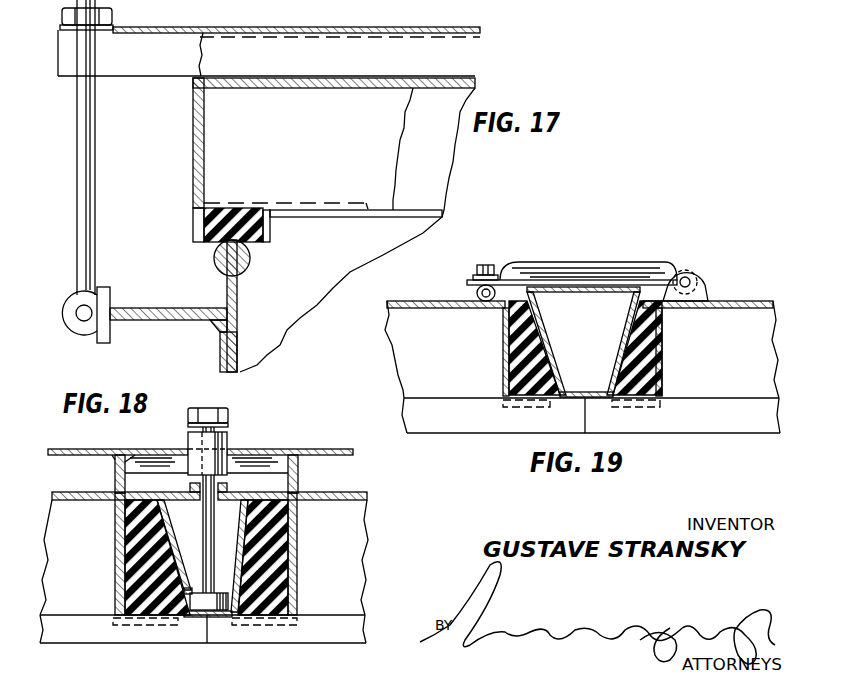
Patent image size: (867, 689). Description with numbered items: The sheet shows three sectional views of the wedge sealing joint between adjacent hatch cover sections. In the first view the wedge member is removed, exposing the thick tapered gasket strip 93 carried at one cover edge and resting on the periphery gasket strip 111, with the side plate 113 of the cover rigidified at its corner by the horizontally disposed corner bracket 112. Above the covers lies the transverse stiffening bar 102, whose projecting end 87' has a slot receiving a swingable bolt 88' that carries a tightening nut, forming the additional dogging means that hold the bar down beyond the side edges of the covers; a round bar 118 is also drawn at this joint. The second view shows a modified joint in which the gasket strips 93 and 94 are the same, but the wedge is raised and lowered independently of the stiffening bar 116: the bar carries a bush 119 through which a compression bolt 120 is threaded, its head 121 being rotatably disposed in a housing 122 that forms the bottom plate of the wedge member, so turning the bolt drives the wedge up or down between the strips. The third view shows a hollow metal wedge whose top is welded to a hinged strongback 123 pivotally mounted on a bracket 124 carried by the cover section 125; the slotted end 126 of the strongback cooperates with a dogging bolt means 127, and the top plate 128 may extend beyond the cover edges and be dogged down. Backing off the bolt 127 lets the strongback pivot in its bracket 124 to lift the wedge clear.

In FIG. 17, the projection 87' is at (266, 41).
In FIG. 17, the stiffening bar 102 is at (333, 27).
In FIG. 17, the swingable bolt 88' is at (77, 171).
In FIG. 17, the side plate 113 is at (193, 133).
In FIG. 17, the gasket strip 93 is at (318, 140).
In FIG. 18, the gasket strip 93 is at (128, 571).
In FIG. 17, the corner bracket 112 is at (282, 200).
In FIG. 17, the periphery gasket strip 111 is at (212, 242).
In FIG. 19, the periphery gasket strip 111 is at (479, 426).
In FIG. 18, the periphery gasket strip 111 is at (123, 634).
In FIG. 17, the round bar 118 is at (251, 260).
In FIG. 18, the compression bolt 120 is at (209, 412).
In FIG. 18, the bush 119 is at (229, 446).
In FIG. 18, the stiffening bar 116 is at (264, 449).
In FIG. 18, the gasket strip 94 is at (283, 571).
In FIG. 18, the housing 122 is at (197, 585).
In FIG. 18, the head 121 is at (210, 610).
In FIG. 19, the dogging bolt means 127 is at (494, 265).
In FIG. 19, the hinged strongback 123 is at (600, 263).
In FIG. 19, the slotted end 126 is at (466, 283).
In FIG. 19, the top plate 128 is at (588, 292).
In FIG. 19, the bracket 124 is at (702, 295).
In FIG. 19, the cover section 125 is at (734, 296).